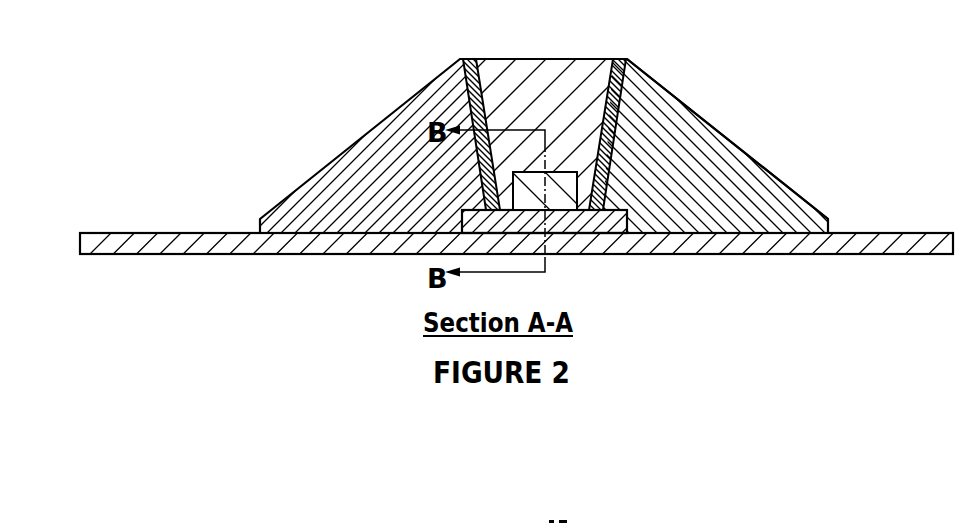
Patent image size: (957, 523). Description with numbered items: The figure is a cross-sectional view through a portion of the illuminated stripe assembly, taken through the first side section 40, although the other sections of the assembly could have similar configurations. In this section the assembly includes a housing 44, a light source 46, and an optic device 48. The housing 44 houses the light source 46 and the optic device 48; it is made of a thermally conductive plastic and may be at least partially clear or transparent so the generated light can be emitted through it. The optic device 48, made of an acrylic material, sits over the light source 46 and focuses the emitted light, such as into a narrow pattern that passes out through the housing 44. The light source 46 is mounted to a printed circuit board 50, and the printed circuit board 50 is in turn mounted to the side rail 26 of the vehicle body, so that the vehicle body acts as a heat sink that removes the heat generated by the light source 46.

The side rail 26 is at (897, 256).
The first side section 40 is at (728, 96).
The housing 44 is at (756, 160).
The light source 46 is at (562, 172).
The optic device 48 is at (570, 87).
The printed circuit board 50 is at (456, 192).